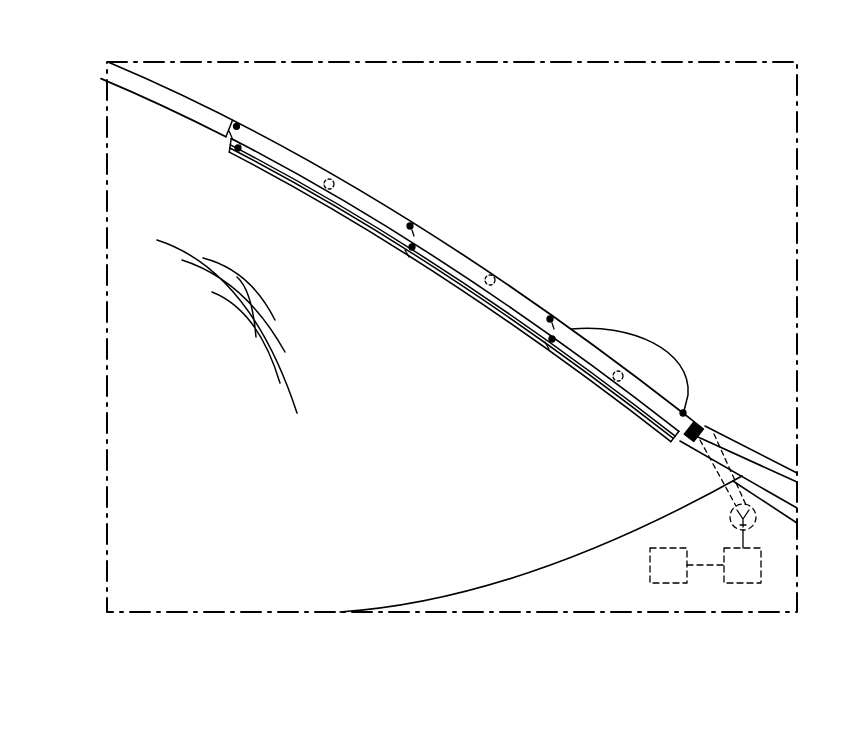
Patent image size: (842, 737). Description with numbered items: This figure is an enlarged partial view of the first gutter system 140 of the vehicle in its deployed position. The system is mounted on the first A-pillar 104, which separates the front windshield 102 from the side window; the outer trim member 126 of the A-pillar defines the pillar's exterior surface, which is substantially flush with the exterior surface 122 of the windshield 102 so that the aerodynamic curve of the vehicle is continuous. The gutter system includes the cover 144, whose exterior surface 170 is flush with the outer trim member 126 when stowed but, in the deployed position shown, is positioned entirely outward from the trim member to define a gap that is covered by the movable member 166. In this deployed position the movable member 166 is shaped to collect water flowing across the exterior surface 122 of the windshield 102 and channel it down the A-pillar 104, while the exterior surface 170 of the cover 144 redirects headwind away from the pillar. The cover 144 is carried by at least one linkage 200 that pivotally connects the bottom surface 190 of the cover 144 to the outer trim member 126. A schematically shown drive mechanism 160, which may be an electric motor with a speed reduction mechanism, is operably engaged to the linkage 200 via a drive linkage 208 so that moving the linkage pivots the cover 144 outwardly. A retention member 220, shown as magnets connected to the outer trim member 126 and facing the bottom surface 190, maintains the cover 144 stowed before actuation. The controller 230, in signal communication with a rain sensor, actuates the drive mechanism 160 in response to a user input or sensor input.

The front windshield 102 is at (127, 413).
The first A-pillar 104 is at (212, 122).
The exterior surface of the windshield 122 is at (127, 308).
The outer trim member 126 is at (170, 100).
The first gutter system 140 is at (367, 207).
The cover 144 is at (443, 257).
The drive mechanism 160 is at (737, 584).
The movable member 166 is at (515, 318).
The exterior surface of the cover 170 is at (512, 290).
The bottom surface of the cover 190 is at (284, 175).
The linkage 200 is at (412, 240).
The drive linkage 208 is at (700, 463).
The retention member 220 is at (336, 172).
The controller 230 is at (670, 584).